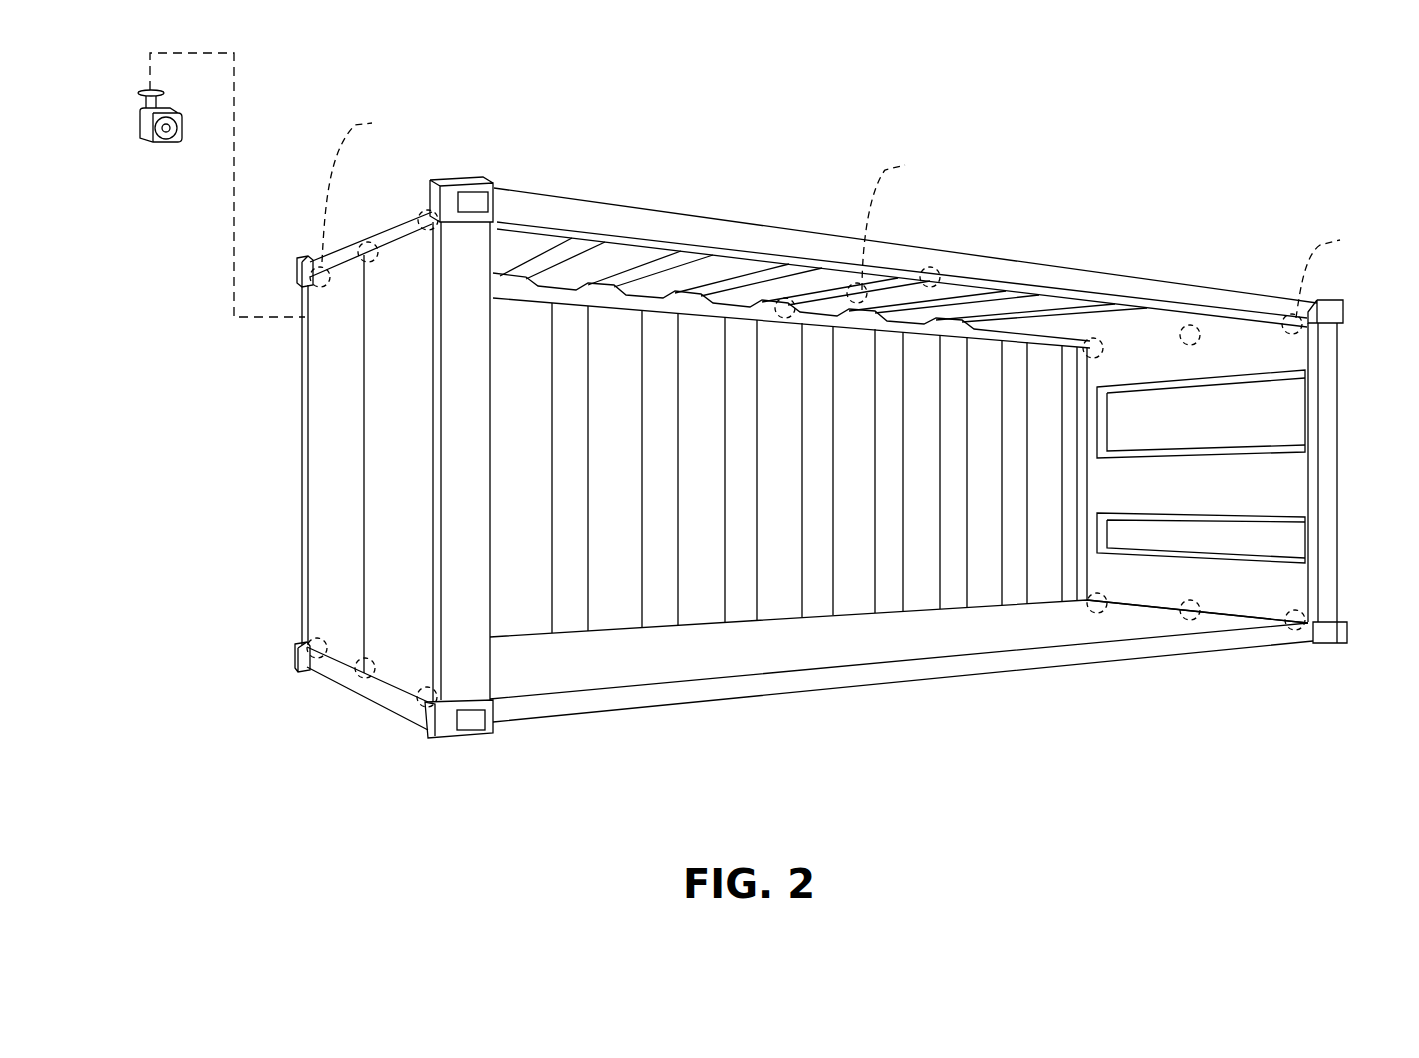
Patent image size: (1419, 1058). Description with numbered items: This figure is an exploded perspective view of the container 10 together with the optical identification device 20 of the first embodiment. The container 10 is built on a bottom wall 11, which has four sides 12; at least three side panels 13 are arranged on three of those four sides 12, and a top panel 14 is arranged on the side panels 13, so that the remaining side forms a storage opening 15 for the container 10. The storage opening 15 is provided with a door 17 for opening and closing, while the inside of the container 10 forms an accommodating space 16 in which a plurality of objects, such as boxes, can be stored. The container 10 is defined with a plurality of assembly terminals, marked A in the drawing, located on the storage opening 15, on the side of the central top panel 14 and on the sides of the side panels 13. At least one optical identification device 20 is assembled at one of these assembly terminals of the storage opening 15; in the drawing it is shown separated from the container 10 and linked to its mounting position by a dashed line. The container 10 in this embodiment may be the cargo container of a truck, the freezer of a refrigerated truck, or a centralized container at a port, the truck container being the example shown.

The container 10 is at (1059, 270).
The bottom wall 11 is at (913, 636).
The sides 12 is at (1083, 650).
The side panels 13 is at (1287, 487).
The top panel 14 is at (1083, 342).
The storage opening 15 is at (437, 602).
The accommodating space 16 is at (735, 657).
The door 17 is at (330, 467).
The optical identification device 20 is at (160, 148).